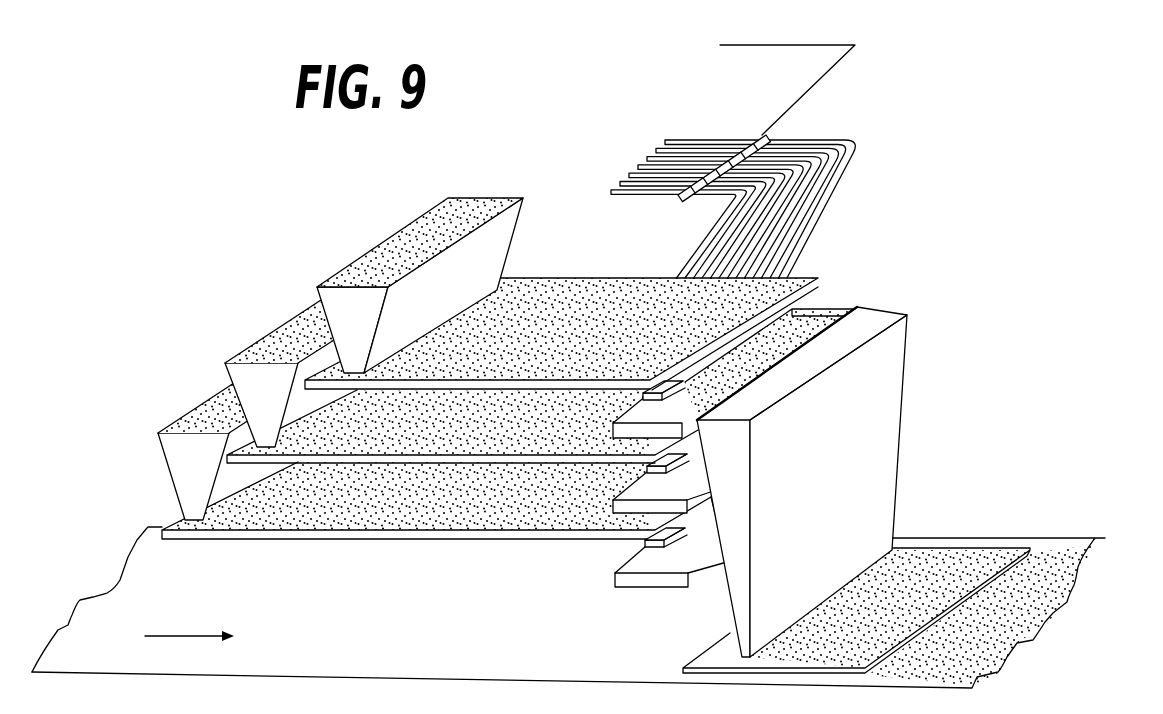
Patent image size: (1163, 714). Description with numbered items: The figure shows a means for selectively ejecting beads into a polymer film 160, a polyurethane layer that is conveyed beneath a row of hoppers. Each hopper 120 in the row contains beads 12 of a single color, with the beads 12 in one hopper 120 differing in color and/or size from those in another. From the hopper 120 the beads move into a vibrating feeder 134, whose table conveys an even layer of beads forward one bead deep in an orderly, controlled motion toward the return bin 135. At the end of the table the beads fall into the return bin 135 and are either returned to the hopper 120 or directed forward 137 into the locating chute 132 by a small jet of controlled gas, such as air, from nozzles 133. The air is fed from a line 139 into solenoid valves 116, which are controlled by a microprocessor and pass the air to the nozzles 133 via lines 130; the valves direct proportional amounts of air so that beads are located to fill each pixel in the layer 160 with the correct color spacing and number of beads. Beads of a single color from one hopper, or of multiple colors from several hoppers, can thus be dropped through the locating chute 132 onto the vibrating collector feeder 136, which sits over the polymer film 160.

The beads 12 is at (402, 260).
The hopper 120 is at (352, 328).
The solenoid valves 116 is at (752, 134).
The line 139 is at (753, 45).
The lines 130 is at (852, 151).
The nozzles 133 is at (672, 413).
The vibrating feeder 134 is at (621, 277).
The return bin 135 is at (650, 580).
The forward direction 137 is at (848, 303).
The locating chute 132 is at (893, 422).
The vibrating collector feeder 136 is at (983, 548).
The polymer film 160 is at (1065, 567).